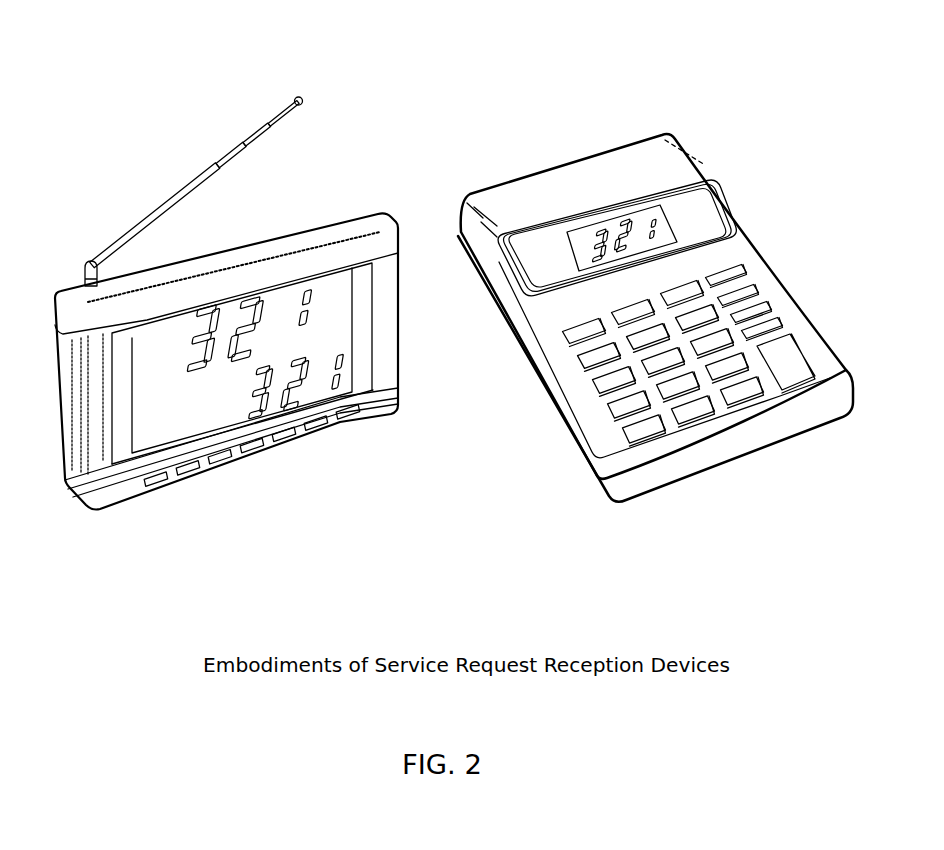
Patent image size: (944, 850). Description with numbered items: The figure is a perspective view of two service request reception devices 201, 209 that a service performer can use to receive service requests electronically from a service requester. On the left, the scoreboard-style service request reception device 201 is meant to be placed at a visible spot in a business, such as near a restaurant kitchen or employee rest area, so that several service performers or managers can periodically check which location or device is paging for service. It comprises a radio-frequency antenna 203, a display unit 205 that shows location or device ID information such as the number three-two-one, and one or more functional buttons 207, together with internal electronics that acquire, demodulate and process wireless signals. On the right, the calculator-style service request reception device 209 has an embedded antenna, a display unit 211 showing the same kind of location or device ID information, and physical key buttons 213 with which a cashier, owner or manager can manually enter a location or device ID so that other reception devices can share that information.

The scoreboard-style service request reception device 201 is at (281, 548).
The radio-frequency antenna 203 is at (237, 137).
The display unit 205 is at (332, 315).
The functional buttons 207 is at (317, 435).
The calculator-style service request reception device 209 is at (746, 550).
The display unit 211 is at (580, 243).
The physical key buttons 213 is at (697, 312).